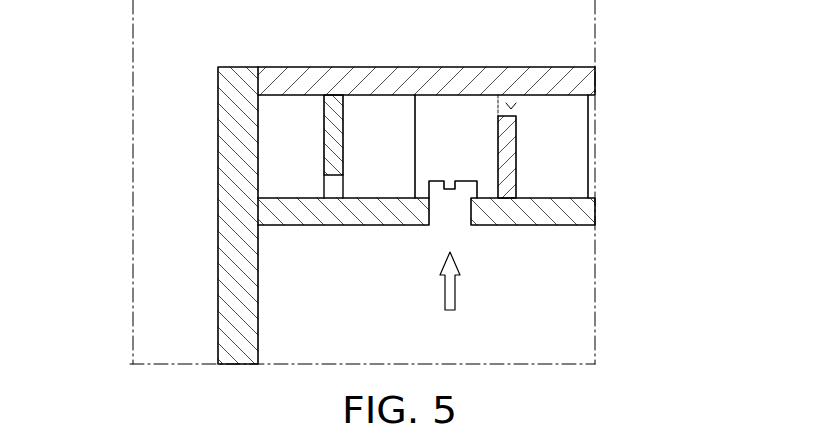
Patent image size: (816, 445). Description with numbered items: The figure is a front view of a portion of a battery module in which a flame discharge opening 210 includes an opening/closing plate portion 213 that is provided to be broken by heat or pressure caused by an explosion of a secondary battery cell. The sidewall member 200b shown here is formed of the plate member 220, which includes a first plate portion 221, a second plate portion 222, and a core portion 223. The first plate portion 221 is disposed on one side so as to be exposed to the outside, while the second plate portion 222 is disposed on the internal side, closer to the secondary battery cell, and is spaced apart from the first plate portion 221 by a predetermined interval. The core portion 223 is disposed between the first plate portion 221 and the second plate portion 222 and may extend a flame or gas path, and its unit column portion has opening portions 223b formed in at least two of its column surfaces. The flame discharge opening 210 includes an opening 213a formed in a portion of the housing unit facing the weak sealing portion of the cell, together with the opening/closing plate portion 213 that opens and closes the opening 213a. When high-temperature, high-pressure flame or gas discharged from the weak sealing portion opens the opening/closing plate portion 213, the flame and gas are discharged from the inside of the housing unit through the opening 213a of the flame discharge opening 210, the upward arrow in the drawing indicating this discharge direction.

The sidewall member 200b is at (233, 115).
The flame discharge opening 210 is at (588, 253).
The opening/closing plate portion 213 is at (478, 193).
The opening 213a is at (448, 209).
The plate member 220 is at (503, 133).
The first plate portion 221 is at (587, 79).
The second plate portion 222 is at (475, 209).
The core portion 223 is at (508, 160).
The opening portions 223b is at (511, 107).